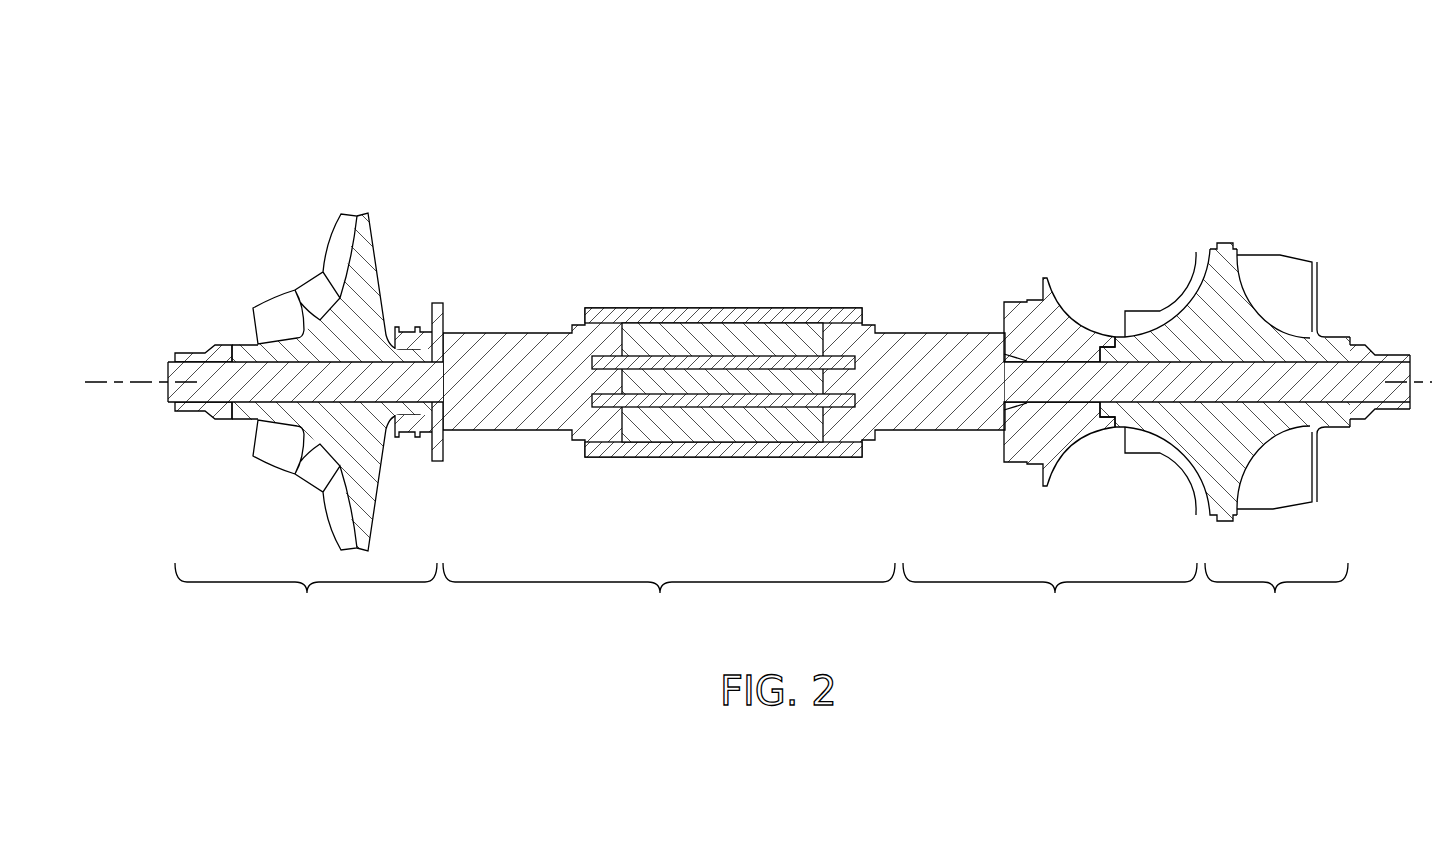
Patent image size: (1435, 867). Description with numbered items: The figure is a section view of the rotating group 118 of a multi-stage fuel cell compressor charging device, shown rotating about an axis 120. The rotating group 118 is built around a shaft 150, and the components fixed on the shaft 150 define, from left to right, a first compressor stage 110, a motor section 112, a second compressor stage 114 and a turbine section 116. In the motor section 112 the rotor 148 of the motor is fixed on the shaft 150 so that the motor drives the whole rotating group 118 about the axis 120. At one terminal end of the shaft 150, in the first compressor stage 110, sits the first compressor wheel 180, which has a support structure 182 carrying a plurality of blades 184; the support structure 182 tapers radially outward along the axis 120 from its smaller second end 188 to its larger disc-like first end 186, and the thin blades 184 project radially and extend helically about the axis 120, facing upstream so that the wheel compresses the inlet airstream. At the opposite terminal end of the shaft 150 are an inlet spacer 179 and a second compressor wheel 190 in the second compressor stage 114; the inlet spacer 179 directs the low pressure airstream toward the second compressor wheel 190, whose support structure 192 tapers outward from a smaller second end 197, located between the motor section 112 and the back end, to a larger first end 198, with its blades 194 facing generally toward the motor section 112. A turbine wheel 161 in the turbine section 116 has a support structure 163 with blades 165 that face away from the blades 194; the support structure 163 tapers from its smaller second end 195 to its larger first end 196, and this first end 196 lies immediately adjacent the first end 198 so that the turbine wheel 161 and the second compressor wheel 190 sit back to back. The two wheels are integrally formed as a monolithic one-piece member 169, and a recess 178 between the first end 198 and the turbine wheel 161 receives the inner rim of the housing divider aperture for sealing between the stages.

The first compressor stage 110 is at (306, 595).
The motor section 112 is at (669, 595).
The second compressor stage 114 is at (1050, 595).
The turbine section 116 is at (1276, 595).
The rotating group 118 is at (353, 130).
The axis 120 is at (120, 382).
The rotor 148 is at (575, 326).
The shaft 150 is at (427, 385).
The turbine wheel 161 is at (1268, 433).
The support structure 163 is at (1262, 327).
The blades 165 is at (1312, 260).
The one-piece member 169 is at (1224, 243).
The recess 178 is at (1222, 518).
The inlet spacer 179 is at (1048, 328).
The first compressor wheel 180 is at (303, 282).
The support structure 182 is at (378, 346).
The blades 184 is at (338, 242).
The first end 186 is at (370, 242).
The second end 188 is at (240, 417).
The second compressor wheel 190 is at (1160, 465).
The support structure 192 is at (1147, 325).
The blades 194 is at (1188, 280).
The second end 195 is at (1335, 422).
The first end 196 is at (1242, 477).
The second end 197 is at (1120, 332).
The first end 198 is at (1207, 247).